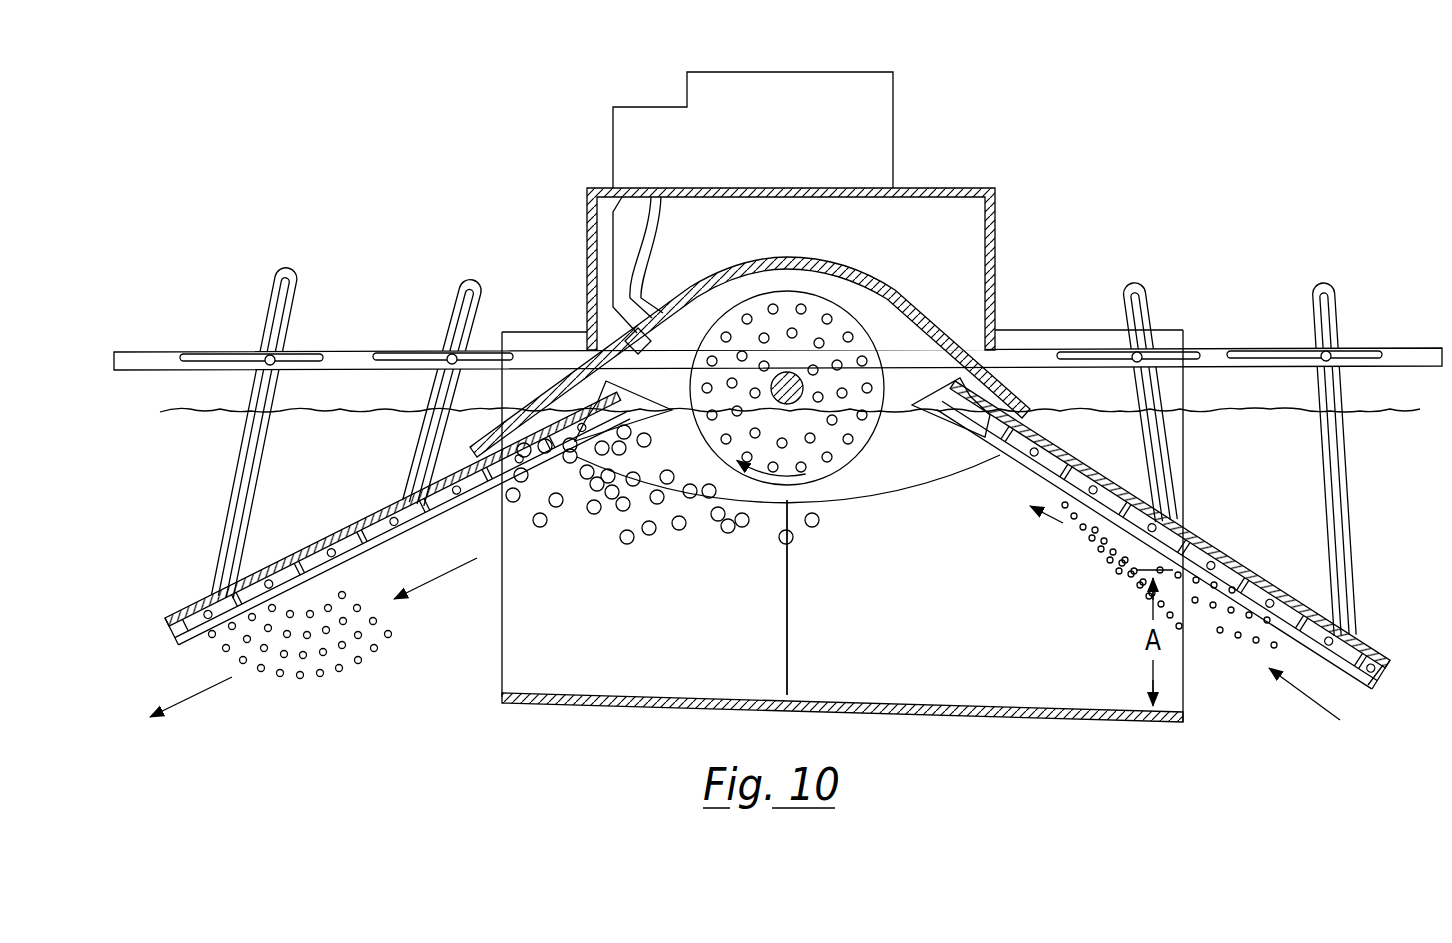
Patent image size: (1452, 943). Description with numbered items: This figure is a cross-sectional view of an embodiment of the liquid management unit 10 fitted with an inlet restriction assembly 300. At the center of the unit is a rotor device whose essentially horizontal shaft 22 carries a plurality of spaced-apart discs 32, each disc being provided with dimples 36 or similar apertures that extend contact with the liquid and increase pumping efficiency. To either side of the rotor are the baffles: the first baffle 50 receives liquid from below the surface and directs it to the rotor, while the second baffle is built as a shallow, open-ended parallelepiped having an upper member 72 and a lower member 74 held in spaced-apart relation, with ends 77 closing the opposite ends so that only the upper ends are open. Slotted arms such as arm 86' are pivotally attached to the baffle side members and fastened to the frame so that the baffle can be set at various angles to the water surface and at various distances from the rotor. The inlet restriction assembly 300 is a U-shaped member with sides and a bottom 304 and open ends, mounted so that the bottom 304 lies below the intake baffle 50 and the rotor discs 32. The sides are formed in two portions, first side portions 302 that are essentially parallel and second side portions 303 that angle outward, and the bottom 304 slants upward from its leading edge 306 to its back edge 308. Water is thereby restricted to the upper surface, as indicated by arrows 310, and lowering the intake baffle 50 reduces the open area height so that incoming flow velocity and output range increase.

The liquid management unit 10 is at (416, 290).
The shaft 22 is at (772, 356).
The discs 32 is at (802, 388).
The dimples 36 is at (758, 436).
The first baffle 50 is at (1170, 539).
The upper member 72 is at (1187, 532).
The lower member 74 is at (1102, 517).
The ends 77 is at (1378, 673).
The arm 86' is at (1348, 449).
The inlet restriction assembly 300 is at (843, 569).
The first side portions 302 is at (687, 652).
The second side portions 303 is at (997, 652).
The bottom 304 is at (940, 714).
The leading edge 306 is at (1190, 722).
The back edge 308 is at (500, 697).
The arrows 310 is at (1340, 720).